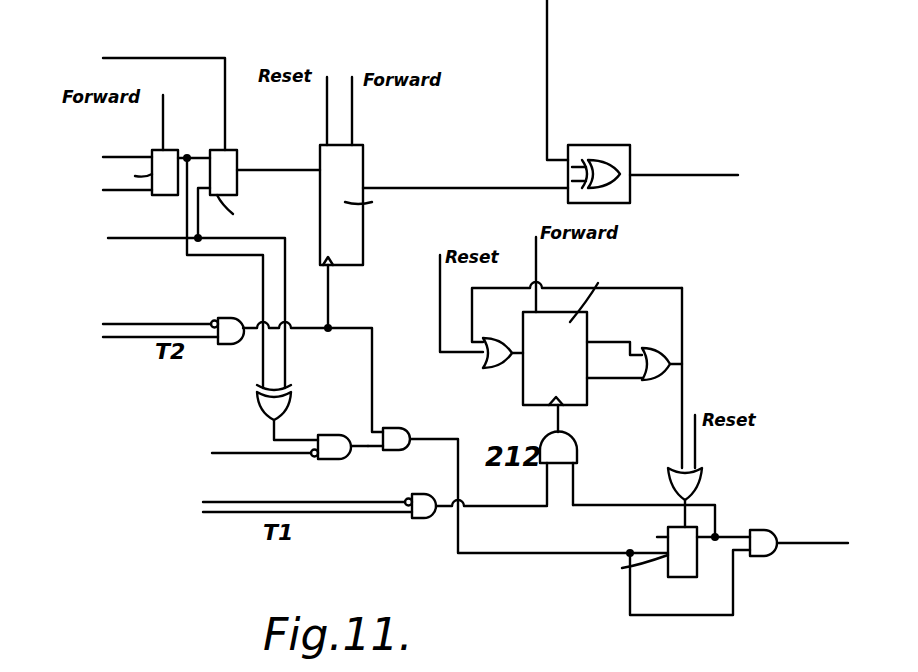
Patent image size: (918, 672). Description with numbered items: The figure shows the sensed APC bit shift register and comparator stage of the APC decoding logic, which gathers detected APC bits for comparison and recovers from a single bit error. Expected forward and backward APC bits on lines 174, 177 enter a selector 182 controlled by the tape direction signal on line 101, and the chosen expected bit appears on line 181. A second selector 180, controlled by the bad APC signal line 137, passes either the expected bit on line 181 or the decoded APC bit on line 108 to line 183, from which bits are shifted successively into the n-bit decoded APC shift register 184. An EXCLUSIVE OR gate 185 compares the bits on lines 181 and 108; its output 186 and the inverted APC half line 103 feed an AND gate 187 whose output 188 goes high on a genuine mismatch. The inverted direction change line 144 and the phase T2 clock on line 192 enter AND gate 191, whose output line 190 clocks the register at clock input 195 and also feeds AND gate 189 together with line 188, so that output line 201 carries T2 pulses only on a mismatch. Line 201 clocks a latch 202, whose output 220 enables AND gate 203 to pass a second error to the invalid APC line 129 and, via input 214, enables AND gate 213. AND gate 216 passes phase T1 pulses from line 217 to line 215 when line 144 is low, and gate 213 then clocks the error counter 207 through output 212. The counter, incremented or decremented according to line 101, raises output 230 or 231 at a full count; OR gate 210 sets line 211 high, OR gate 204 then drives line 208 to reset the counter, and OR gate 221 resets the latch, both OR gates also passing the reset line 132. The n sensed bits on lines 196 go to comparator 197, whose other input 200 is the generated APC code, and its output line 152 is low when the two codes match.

The bad APC signal line 137 is at (185, 57).
The tape direction signal line 101 is at (165, 96).
The forward expected APC bit line 174 is at (122, 157).
The backward expected APC bit line 177 is at (127, 190).
The selector 182 is at (165, 195).
The selector 180 is at (238, 190).
The expected APC bit line 181 is at (195, 146).
The decoded APC bit line 108 is at (297, 362).
The shift register input line 183 is at (263, 168).
The reset line 132 is at (327, 112).
The decoded APC shift register 184 is at (366, 225).
The shift register output lines 196 is at (422, 187).
The clock input 195 is at (334, 282).
The APC clock line 190 is at (352, 328).
The comparator input 200 is at (548, 80).
The comparator 197 is at (603, 145).
The comparator output line 152 is at (700, 175).
The direction change line 144 is at (137, 323).
The APC CLK phase T2 line 192 is at (133, 338).
The AND gate 191 is at (225, 320).
The EXCLUSIVE OR gate 185 is at (257, 410).
The EXCLUSIVE OR gate output line 186 is at (302, 434).
The APC half line 103 is at (212, 453).
The AND gate 187 is at (342, 460).
The AND gate output line 188 is at (366, 447).
The AND gate 189 is at (395, 428).
The AND gate output line 201 is at (443, 437).
The error counter 207 is at (578, 406).
The OR gate output line 208 is at (510, 338).
The OR gate 204 is at (505, 360).
The counter output 230 is at (620, 342).
The counter output 231 is at (622, 380).
The OR gate 210 is at (668, 352).
The OR gate output line 211 is at (683, 303).
The OR gate 221 is at (700, 480).
The AND gate 213 is at (572, 453).
The AND gate output 212 is at (521, 438).
The clock output line 215 is at (508, 505).
The AND gate input 214 is at (592, 506).
The latch output line 220 is at (718, 533).
The latch 202 is at (666, 567).
The AND gate 203 is at (765, 548).
The invalid APC line 129 is at (828, 542).
The APC CLK phase T1 line 217 is at (330, 513).
The AND gate 216 is at (436, 515).